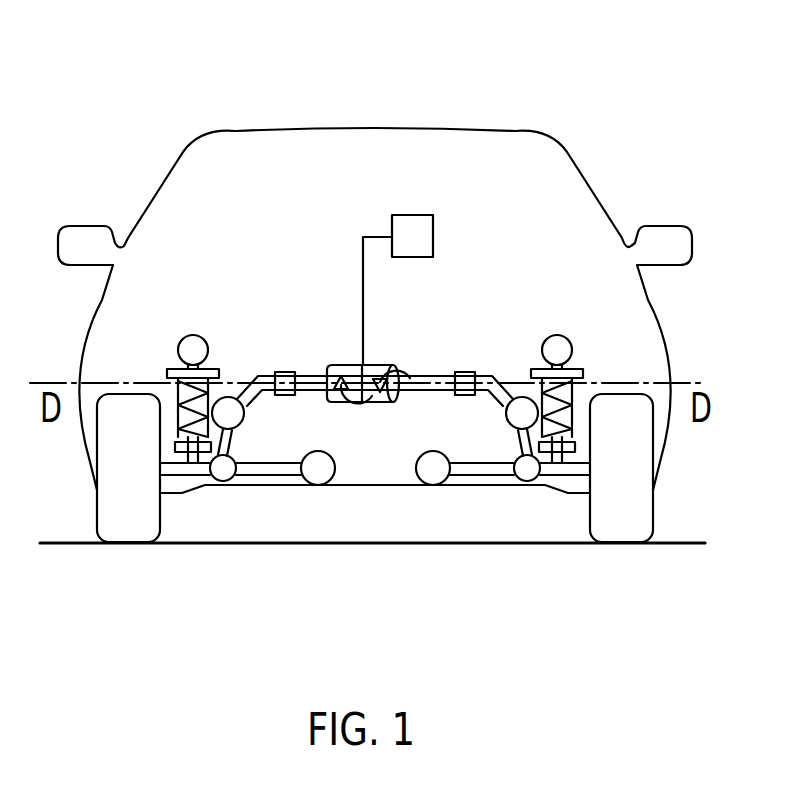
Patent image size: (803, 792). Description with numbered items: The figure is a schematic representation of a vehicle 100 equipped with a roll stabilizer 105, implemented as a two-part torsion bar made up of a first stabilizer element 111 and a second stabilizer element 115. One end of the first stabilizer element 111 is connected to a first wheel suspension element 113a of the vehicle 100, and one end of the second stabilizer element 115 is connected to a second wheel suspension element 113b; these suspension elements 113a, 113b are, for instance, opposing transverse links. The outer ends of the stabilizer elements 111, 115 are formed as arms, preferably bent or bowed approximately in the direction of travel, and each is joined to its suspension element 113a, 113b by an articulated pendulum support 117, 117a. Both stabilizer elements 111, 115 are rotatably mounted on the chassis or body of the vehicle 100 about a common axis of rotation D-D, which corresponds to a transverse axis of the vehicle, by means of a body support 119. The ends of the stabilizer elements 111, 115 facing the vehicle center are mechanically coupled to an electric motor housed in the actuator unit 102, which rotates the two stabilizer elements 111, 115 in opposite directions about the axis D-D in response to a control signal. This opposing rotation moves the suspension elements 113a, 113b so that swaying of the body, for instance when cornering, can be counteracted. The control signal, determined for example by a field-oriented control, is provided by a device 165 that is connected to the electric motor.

The vehicle 100 is at (308, 128).
The actuator unit 102 is at (388, 402).
The roll stabilizer 105 is at (437, 367).
The first stabilizer element 111 is at (310, 376).
The first wheel suspension element 113a is at (560, 466).
The second wheel suspension element 113b is at (186, 466).
The second stabilizer element 115 is at (403, 402).
The pendulum support 117 is at (522, 443).
The pendulum support 117a is at (228, 443).
The body support 119 is at (283, 372).
The device 165 is at (407, 215).